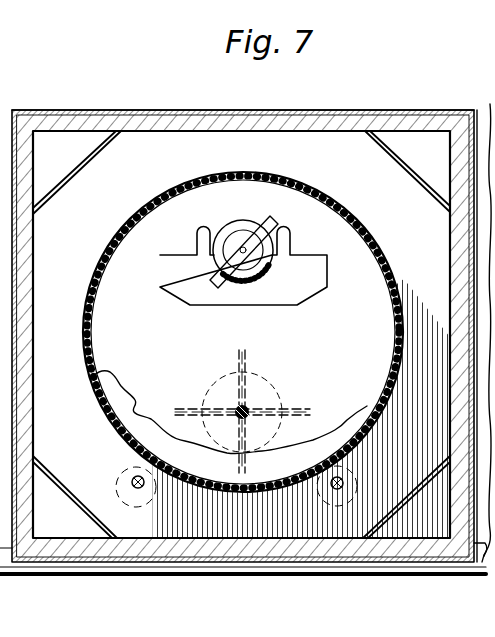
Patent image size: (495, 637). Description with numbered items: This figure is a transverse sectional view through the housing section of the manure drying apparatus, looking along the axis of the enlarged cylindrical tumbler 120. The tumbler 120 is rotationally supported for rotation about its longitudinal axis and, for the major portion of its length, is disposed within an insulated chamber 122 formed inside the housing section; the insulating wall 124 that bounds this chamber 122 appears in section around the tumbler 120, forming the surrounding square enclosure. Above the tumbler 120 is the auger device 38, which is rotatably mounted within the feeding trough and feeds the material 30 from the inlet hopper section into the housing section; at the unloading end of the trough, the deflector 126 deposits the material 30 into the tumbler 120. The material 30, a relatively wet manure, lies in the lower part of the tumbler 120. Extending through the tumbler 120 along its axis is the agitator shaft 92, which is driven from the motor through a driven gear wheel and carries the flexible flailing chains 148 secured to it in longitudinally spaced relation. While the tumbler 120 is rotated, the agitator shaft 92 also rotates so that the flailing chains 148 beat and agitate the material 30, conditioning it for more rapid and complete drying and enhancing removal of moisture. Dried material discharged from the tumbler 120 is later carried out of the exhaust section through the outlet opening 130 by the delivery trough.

The insulated chamber 122 is at (354, 148).
The insulating wall 124 is at (149, 126).
The cylindrical tumbler 120 is at (299, 185).
The deflector 126 is at (173, 277).
The auger device 38 is at (229, 228).
The flexible flailing chains 148 is at (243, 368).
The agitator shaft 92 is at (249, 408).
The manure 30 is at (130, 418).
The outlet opening 130 is at (213, 480).